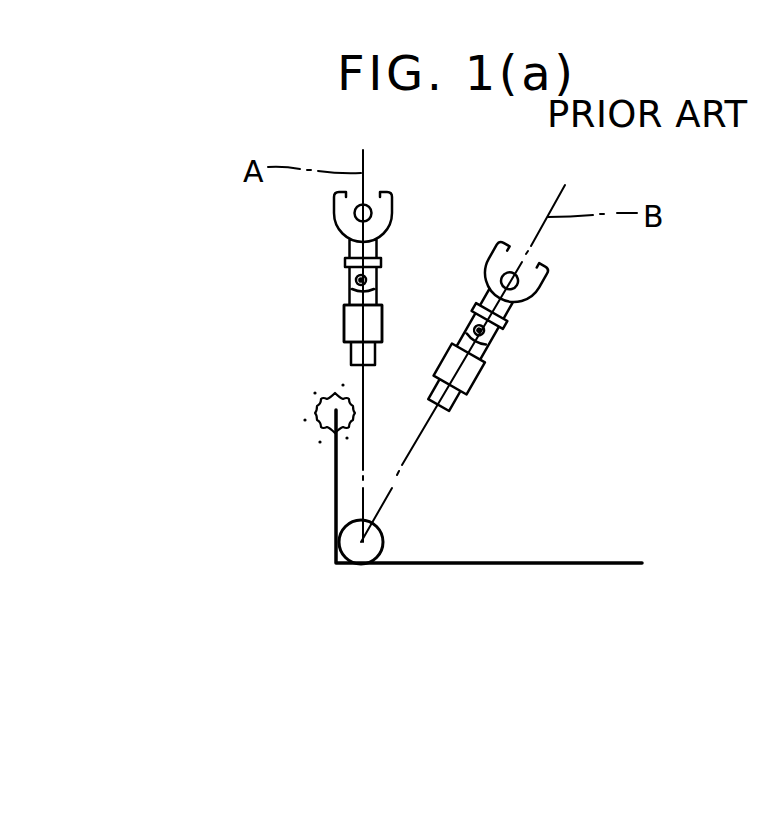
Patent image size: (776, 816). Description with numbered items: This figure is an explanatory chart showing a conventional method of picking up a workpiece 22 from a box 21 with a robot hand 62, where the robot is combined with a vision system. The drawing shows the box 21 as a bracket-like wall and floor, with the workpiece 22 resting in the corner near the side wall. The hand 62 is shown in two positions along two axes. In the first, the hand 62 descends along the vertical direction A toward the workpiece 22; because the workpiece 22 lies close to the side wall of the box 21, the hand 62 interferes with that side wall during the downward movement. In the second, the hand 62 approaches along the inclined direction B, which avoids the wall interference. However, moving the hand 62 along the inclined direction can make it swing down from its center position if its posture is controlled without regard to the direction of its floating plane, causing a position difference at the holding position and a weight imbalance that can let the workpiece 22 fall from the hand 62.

The hand 62 is at (372, 318).
The box 21 is at (335, 498).
The workpiece 22 is at (372, 543).